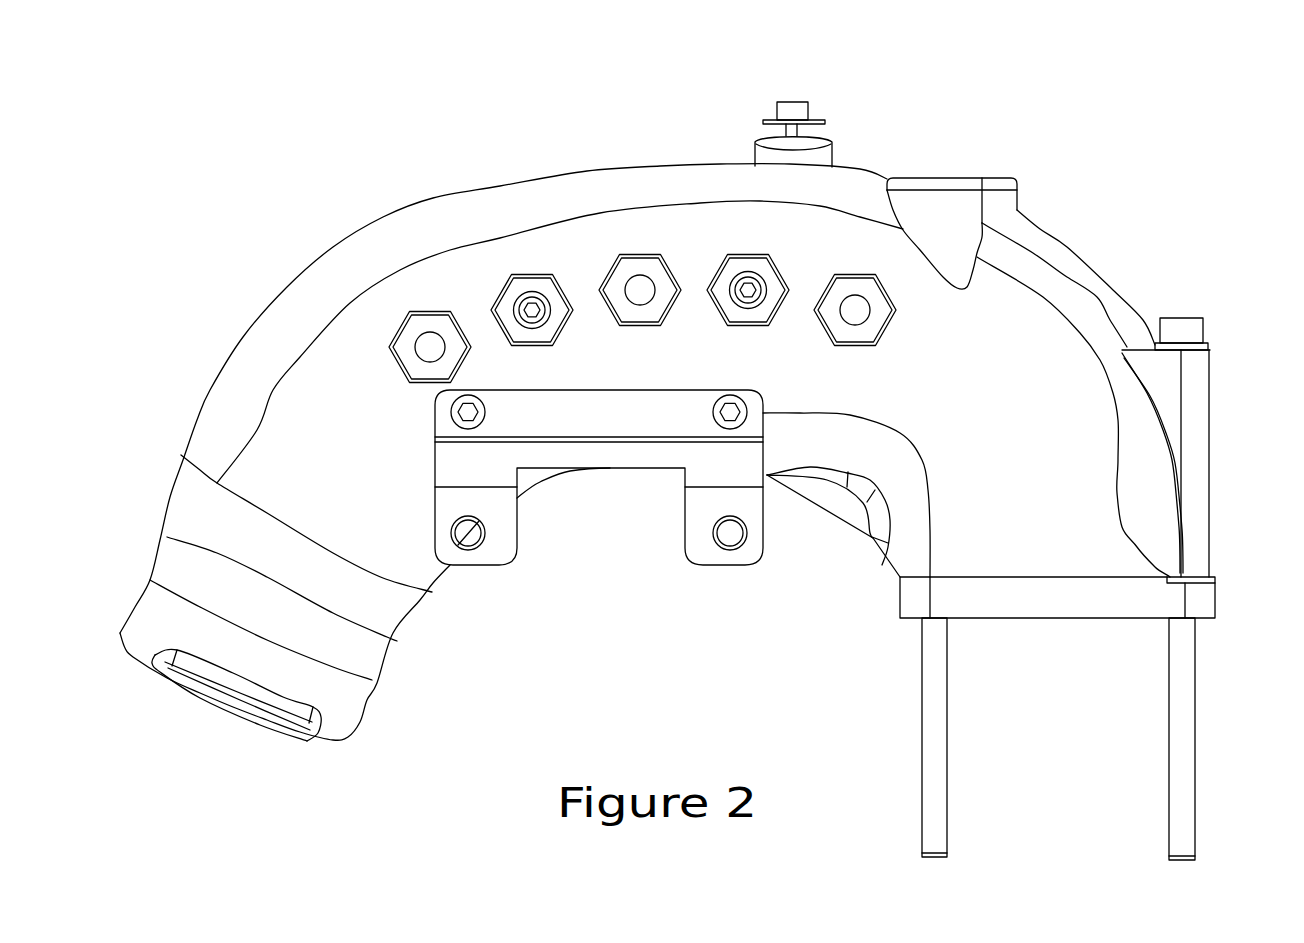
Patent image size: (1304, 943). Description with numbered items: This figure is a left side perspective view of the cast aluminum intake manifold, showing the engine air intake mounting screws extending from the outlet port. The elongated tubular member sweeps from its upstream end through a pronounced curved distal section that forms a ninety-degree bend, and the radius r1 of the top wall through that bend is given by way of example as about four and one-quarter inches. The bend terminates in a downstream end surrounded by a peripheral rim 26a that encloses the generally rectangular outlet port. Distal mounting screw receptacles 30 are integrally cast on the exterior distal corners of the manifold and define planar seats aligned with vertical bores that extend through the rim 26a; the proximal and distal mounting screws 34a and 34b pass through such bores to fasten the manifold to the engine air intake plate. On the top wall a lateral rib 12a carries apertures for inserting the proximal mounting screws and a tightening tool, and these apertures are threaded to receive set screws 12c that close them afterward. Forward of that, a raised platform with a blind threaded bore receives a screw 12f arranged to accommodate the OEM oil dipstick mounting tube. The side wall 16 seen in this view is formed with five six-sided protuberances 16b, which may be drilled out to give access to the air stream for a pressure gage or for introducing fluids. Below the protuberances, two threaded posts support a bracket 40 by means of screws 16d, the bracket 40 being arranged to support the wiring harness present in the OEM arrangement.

The side wall 16 is at (318, 743).
The six-sided protuberances 16b is at (733, 248).
The screws 16d is at (733, 403).
The lateral rib 12a is at (932, 237).
The set screws 12c is at (835, 157).
The screw 12f is at (793, 101).
The bracket 40 is at (622, 425).
The peripheral rim 26a is at (1053, 598).
The distal mounting screw receptacles 30 is at (1207, 465).
The proximal mounting screws 34a is at (920, 732).
The distal mounting screws 34b is at (1205, 330).
The radius of the top wall through the bend r1 is at (1100, 280).